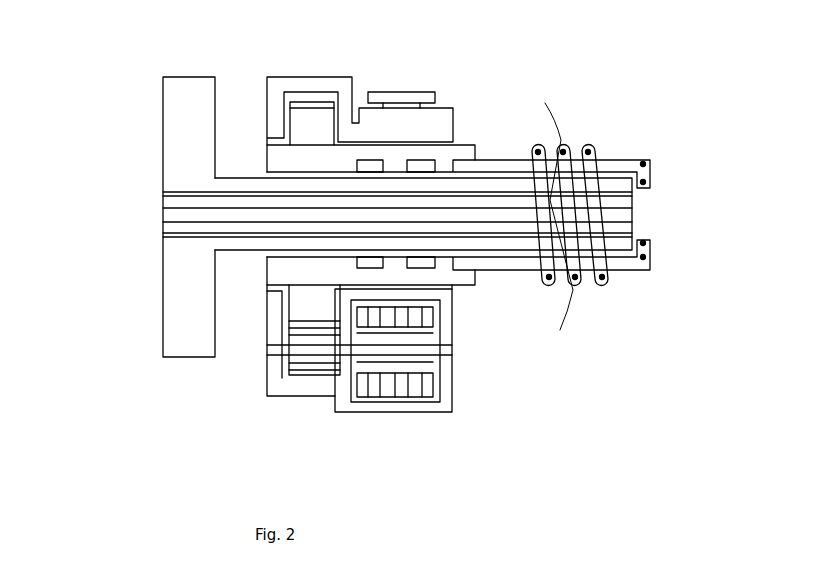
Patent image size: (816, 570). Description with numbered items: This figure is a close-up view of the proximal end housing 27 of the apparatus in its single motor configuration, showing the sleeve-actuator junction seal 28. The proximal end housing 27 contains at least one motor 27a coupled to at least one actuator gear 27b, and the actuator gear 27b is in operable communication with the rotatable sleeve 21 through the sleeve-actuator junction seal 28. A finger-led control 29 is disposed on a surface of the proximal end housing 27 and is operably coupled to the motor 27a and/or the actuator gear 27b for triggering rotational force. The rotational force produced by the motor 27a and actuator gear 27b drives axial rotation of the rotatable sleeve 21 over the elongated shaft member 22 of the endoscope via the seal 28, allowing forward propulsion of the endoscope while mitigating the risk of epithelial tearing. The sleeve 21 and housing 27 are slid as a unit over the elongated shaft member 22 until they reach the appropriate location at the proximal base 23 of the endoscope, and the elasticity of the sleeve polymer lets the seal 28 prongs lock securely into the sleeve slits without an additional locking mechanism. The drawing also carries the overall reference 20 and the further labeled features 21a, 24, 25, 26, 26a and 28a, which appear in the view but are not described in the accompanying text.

The linear motor 20 is at (97, 68).
The rotatable sleeve 21 is at (578, 128).
The coil lead wire 21a is at (437, 258).
The elongated shaft member 22 is at (258, 172).
The proximal base 23 is at (163, 150).
The bearing 24 is at (680, 190).
The coil end 25 is at (605, 288).
The shaft 26 is at (652, 214).
The shaft end 26a is at (645, 257).
The proximal end housing 27 is at (307, 428).
The motor 27a is at (412, 412).
The actuator gear 27b is at (282, 380).
The sleeve-actuator junction seal 28 is at (457, 143).
The lower base 28a is at (452, 283).
The finger-led control 29 is at (407, 88).